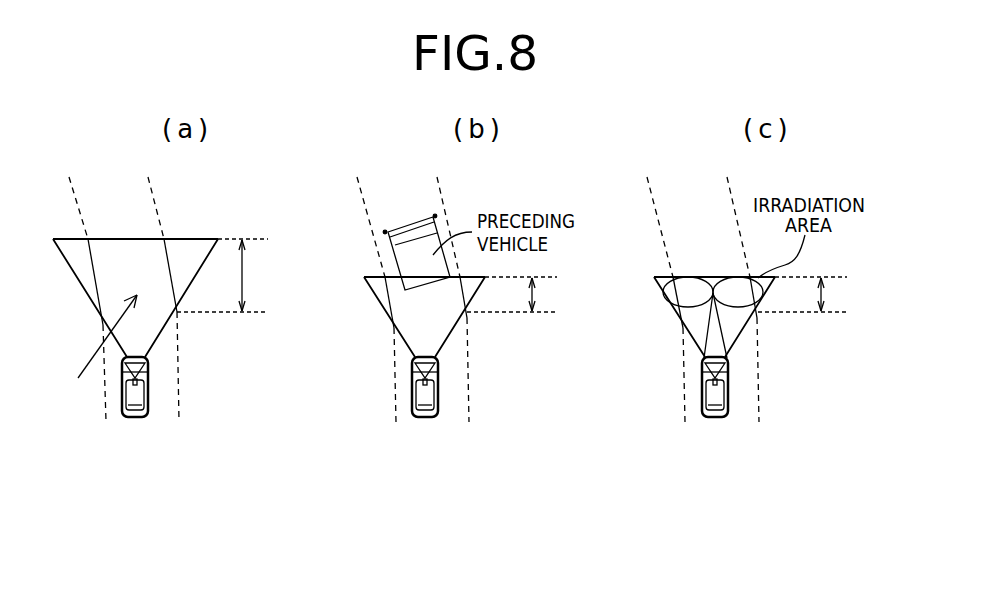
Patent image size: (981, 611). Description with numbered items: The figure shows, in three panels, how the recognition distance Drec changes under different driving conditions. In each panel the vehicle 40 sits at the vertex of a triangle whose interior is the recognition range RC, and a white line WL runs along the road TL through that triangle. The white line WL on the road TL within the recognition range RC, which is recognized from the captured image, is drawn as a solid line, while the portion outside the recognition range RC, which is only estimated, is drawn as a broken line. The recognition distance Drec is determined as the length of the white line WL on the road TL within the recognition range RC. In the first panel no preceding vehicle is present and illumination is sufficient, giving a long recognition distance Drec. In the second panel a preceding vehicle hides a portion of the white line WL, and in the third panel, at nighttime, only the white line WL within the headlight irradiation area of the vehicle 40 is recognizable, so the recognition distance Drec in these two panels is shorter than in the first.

The vehicle 40 is at (137, 418).
The white line WL is at (95, 261).
The road TL is at (99, 353).
The recognition range RC is at (163, 335).
The end point of recognition range EP is at (551, 258).
The recognition distance Drec is at (538, 276).